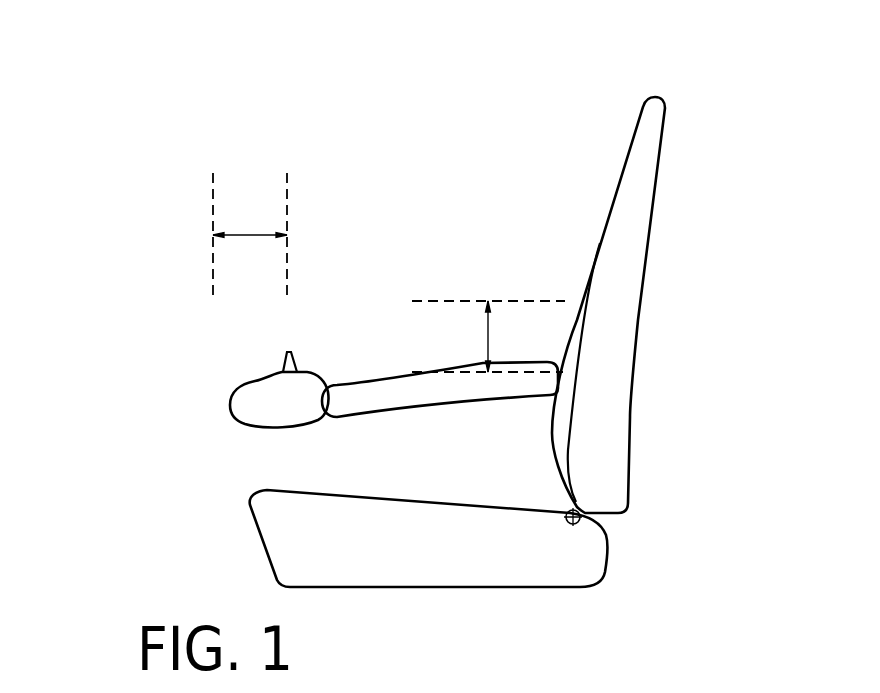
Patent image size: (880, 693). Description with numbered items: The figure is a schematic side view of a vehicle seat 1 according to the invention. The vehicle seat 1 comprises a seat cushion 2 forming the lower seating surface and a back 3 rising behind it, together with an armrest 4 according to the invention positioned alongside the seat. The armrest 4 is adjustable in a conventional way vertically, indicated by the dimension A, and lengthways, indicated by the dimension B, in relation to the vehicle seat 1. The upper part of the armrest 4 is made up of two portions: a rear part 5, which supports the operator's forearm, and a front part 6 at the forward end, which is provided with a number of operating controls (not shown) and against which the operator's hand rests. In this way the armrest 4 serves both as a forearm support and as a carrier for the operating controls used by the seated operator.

The vehicle seat 1 is at (458, 253).
The seat cushion 2 is at (333, 580).
The back 3 is at (623, 368).
The armrest 4 is at (309, 342).
The rear part 5 is at (382, 393).
The front part 6 is at (243, 406).